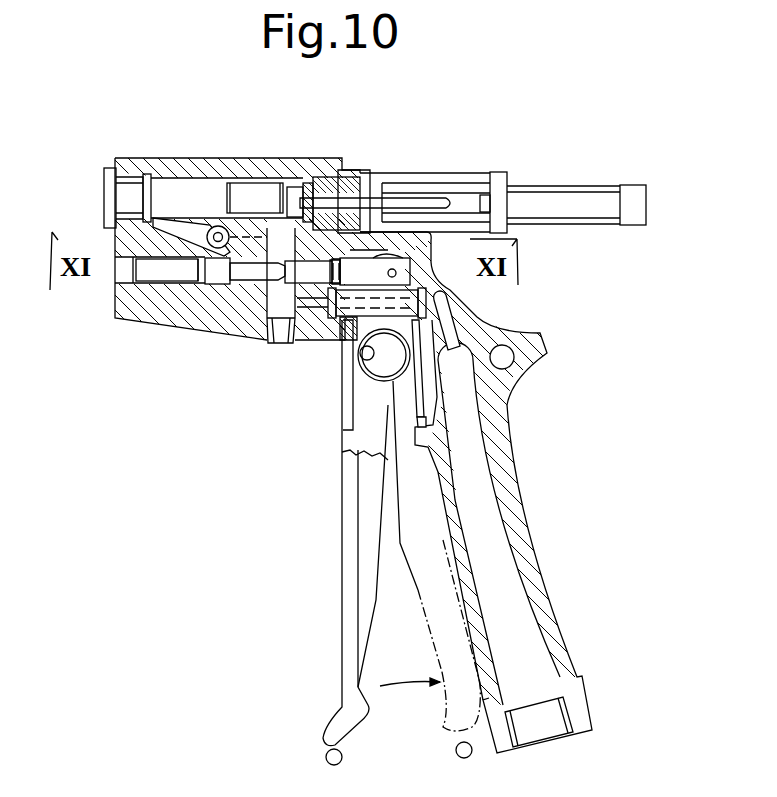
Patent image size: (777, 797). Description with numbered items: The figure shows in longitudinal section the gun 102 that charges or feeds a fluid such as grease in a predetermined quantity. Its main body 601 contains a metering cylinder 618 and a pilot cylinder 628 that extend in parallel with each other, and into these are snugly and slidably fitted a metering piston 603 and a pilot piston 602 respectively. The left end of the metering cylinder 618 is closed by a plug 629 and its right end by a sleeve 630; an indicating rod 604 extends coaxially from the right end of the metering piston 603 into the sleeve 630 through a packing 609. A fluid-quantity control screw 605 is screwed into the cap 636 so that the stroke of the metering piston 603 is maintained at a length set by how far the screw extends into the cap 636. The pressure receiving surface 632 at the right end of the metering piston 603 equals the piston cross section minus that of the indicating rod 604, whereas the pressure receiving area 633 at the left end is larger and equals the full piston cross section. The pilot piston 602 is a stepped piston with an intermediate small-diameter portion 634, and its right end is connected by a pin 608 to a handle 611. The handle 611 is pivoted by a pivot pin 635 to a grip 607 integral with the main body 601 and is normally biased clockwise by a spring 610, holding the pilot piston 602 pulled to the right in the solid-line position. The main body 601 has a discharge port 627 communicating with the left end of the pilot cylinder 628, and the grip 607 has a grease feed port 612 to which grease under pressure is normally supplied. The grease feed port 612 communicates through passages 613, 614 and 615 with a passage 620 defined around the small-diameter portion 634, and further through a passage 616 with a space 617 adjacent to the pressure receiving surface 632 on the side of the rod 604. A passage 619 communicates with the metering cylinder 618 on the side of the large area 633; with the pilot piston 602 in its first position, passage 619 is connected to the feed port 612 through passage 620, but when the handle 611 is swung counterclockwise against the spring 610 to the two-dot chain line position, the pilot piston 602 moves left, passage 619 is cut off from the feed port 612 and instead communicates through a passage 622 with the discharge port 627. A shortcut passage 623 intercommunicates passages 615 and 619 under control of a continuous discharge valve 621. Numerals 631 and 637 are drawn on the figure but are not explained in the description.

The gun 102 is at (463, 167).
The main body 601 is at (113, 318).
The pilot piston 602 is at (283, 345).
The metering piston 603 is at (265, 182).
The indicating rod 604 is at (492, 170).
The fluid-quantity control screw 605 is at (630, 185).
The grip 607 is at (512, 400).
The pin 608 is at (458, 284).
The packing 609 is at (340, 170).
The spring 610 is at (390, 410).
The handle 611 is at (341, 510).
The grease feed port 612 is at (548, 730).
The passage 613 is at (483, 330).
The passage 614 is at (312, 310).
The passage 615 is at (253, 284).
The passage 616 is at (297, 186).
The space 617 is at (306, 182).
The metering cylinder 618 is at (150, 178).
The passage 619 is at (172, 280).
The passage 620 is at (297, 275).
The continuous discharge valve 621 is at (182, 180).
The passage 622 is at (207, 272).
The shortcut passage 623 is at (233, 178).
The discharge port 627 is at (115, 280).
The pilot cylinder 628 is at (242, 275).
The plug 629 is at (104, 192).
The sleeve 630 is at (385, 180).
The inner tube 631 is at (378, 185).
The pressure receiving surface 632 is at (318, 176).
The pressure receiving area 633 is at (200, 190).
The small-diameter portion 634 is at (262, 283).
The pivot pin 635 is at (345, 398).
The cap 636 is at (432, 180).
The roller 637 is at (222, 250).